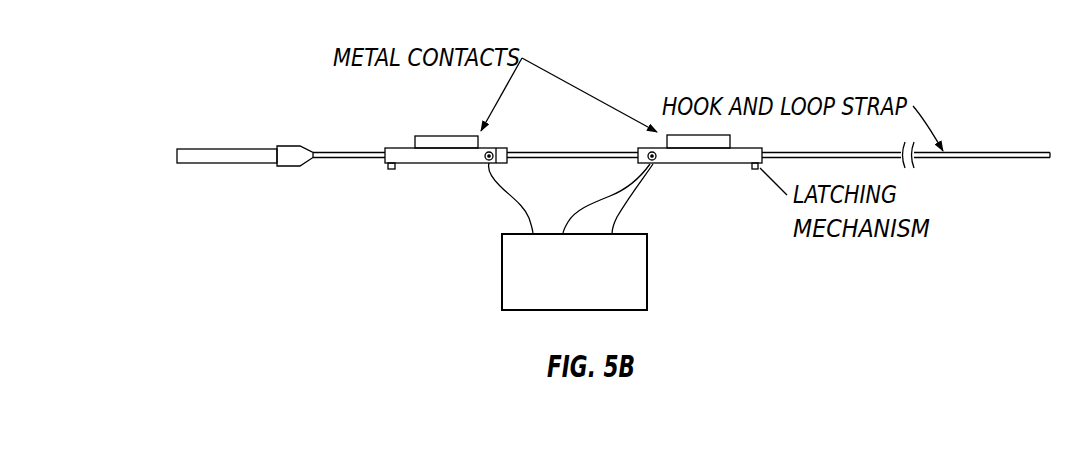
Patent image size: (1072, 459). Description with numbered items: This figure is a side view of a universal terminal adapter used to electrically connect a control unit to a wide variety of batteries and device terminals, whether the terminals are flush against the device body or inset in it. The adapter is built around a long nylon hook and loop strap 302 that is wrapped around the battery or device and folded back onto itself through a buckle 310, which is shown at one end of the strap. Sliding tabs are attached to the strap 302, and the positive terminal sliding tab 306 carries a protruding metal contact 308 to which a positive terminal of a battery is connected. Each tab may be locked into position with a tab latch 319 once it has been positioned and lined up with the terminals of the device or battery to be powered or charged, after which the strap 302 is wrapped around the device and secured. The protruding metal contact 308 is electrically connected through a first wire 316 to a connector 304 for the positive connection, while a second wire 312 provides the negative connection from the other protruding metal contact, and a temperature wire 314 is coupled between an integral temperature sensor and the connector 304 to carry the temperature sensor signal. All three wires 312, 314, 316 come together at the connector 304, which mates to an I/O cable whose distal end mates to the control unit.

The hook and loop strap 302 is at (968, 151).
The connector 304 is at (593, 287).
The sliding tab 306 is at (395, 151).
The protruding metal contact 308 is at (467, 138).
The buckle 310 is at (245, 152).
The second wire 312 is at (655, 168).
The temperature wire 314 is at (618, 194).
The first wire 316 is at (507, 196).
The tab latch 319 is at (390, 170).